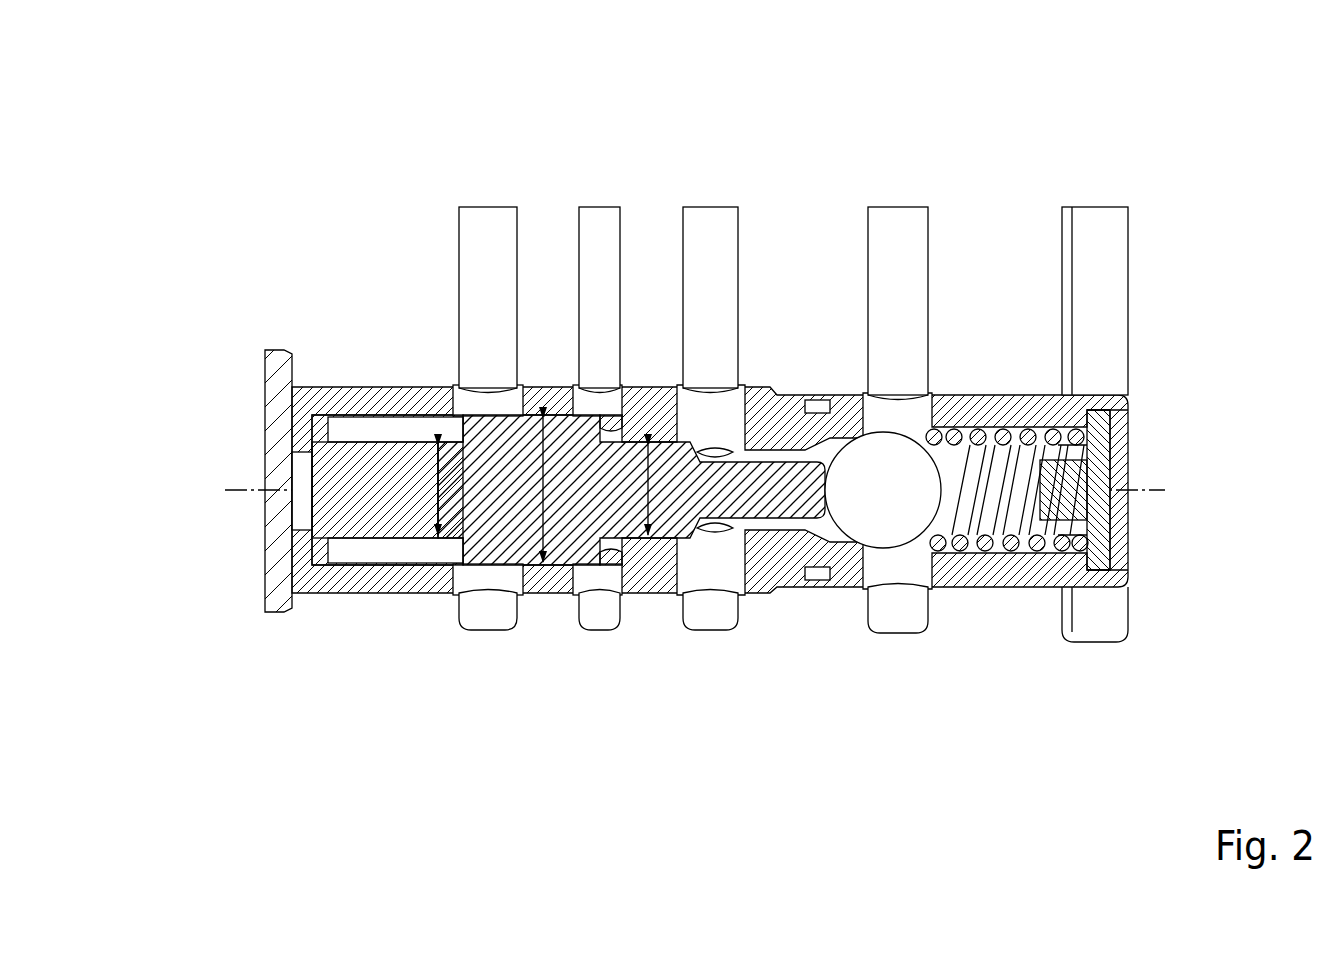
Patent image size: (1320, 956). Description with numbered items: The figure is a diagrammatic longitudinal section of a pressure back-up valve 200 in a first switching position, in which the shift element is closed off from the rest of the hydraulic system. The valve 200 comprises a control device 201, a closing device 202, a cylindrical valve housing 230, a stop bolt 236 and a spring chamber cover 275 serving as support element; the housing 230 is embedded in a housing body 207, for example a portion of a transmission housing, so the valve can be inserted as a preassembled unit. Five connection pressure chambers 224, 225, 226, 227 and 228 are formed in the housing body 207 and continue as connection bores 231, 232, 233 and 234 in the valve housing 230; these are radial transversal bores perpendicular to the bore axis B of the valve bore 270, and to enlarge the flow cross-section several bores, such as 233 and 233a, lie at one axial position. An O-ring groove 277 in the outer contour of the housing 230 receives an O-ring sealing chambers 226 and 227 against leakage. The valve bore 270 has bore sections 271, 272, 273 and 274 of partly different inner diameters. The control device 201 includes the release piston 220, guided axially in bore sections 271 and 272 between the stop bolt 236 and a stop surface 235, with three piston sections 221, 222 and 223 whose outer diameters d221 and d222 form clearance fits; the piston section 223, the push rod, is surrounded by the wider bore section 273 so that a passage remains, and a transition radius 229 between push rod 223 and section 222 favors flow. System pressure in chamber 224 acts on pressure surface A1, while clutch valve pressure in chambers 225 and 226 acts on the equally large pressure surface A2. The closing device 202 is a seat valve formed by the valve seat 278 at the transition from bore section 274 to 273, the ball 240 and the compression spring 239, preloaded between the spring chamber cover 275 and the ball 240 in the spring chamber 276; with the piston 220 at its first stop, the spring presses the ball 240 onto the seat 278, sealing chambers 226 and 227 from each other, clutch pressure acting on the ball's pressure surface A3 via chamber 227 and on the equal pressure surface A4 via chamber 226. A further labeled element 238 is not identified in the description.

The pressure back-up valve 200 is at (285, 212).
The control device 201 is at (542, 173).
The closing device 202 is at (898, 175).
The housing body 207 is at (998, 335).
The release piston 220 is at (482, 403).
The piston section 221 is at (430, 595).
The piston section 222 is at (650, 442).
The piston section (push rod) 223 is at (760, 478).
The connection pressure chamber 224 is at (485, 252).
The connection pressure chamber 225 is at (633, 457).
The connection pressure chamber 226 is at (712, 252).
The connection pressure chamber 227 is at (866, 345).
The connection pressure chamber 228 is at (1103, 240).
The transition radius 229 is at (705, 573).
The valve housing 230 is at (413, 387).
The connection bore 231 is at (488, 575).
The connection bore 232 is at (593, 577).
The connection bore 233 is at (725, 578).
The connection bore 233a is at (813, 583).
The connection bore 234 is at (960, 556).
The stop surface 235 is at (612, 556).
The stop bolt 236 is at (360, 518).
The piston sleeve 238 is at (317, 595).
The compression spring 239 is at (1080, 584).
The ball 240 is at (1095, 585).
The valve bore 270 is at (397, 430).
The bore section 271 is at (387, 593).
The bore section 272 is at (673, 440).
The bore section 273 is at (782, 430).
The bore section 274 is at (1035, 405).
The spring chamber cover 275 is at (1093, 507).
The spring chamber 276 is at (1090, 533).
The O-ring groove 277 is at (852, 546).
The valve seat 278 is at (898, 512).
The pressure surface A1 is at (430, 466).
The pressure surface A2 is at (600, 253).
The pressure surface A3 is at (1087, 458).
The pressure surface A4 is at (900, 370).
The bore axis B is at (253, 492).
The outer diameter of the piston section 221 d221 is at (465, 592).
The outer diameter of the piston section 222 d222 is at (557, 575).